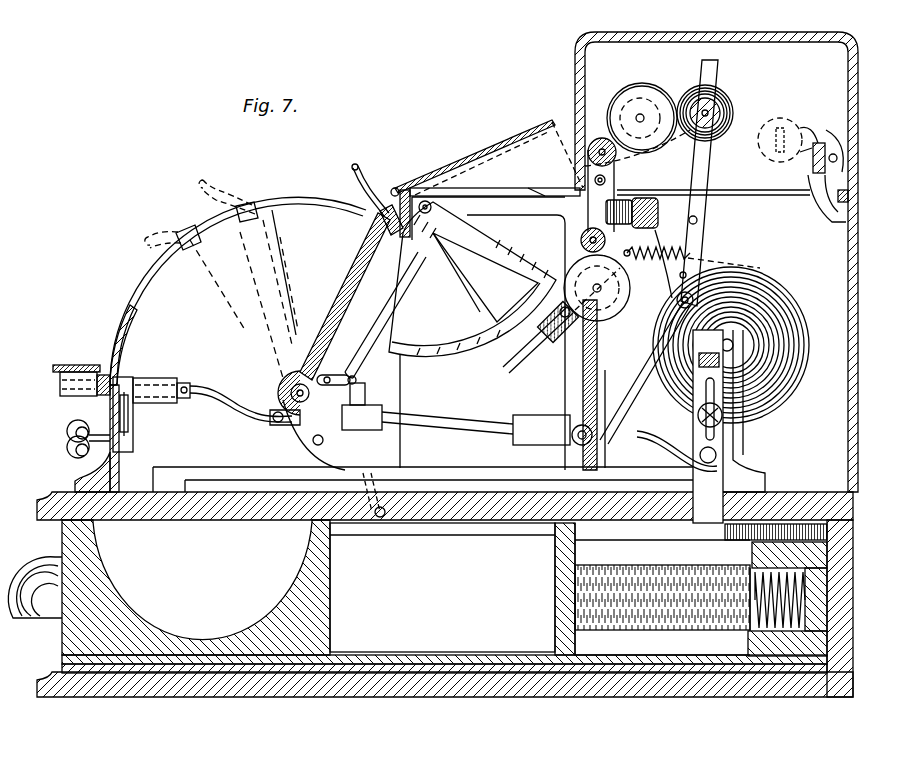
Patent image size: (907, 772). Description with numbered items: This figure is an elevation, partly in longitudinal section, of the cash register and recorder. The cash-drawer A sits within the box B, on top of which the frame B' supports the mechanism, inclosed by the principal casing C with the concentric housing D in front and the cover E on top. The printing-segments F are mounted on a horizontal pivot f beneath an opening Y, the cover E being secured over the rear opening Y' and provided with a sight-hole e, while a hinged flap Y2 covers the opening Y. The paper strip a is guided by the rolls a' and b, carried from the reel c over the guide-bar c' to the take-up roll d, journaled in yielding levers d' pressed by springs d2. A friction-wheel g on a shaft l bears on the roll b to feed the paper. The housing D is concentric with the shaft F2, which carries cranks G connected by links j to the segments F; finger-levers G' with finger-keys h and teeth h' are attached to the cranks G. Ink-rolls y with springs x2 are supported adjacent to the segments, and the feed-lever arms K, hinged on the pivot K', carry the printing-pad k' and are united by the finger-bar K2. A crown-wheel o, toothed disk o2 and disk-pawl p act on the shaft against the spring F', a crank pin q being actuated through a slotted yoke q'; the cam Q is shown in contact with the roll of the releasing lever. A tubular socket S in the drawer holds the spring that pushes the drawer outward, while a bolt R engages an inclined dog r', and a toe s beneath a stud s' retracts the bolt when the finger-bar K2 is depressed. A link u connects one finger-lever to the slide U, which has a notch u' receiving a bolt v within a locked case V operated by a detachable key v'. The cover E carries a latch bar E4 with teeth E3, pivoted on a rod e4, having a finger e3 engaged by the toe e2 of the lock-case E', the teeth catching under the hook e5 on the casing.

The cash-drawer A is at (60, 638).
The box B is at (432, 609).
The frame B' is at (464, 340).
The principal casing C is at (853, 369).
The concentric housing D is at (220, 336).
The cover E is at (716, 249).
The cylinder lock-case E' is at (780, 126).
The teeth E3 is at (822, 218).
The bar E4 is at (828, 162).
The printing-segments F is at (472, 241).
The spring F' is at (543, 179).
The shaft F2 is at (283, 393).
The cranks G is at (244, 299).
The finger-levers G' is at (331, 295).
The arms of feed-lever K is at (267, 401).
The pivot K' is at (552, 443).
The finger-bar K2 is at (70, 365).
The cam Q is at (382, 520).
The bolt R is at (708, 426).
The tubular socket S is at (575, 628).
The slide U is at (160, 380).
The locked case V is at (134, 415).
The opening Y is at (495, 179).
The opening Y' is at (713, 179).
The flap Y2 is at (492, 152).
The paper strip a is at (672, 198).
The roll a' is at (581, 236).
The roll b is at (615, 160).
The reel c is at (731, 345).
The guide-bar c' is at (597, 288).
The take-up roll d is at (716, 113).
The yielding levers d' is at (718, 178).
The springs d2 is at (660, 262).
The sight-hole e is at (590, 178).
The toe e2 is at (812, 158).
The finger e3 is at (810, 130).
The rod e4 is at (835, 152).
The hook e5 is at (850, 204).
The pivot f is at (432, 209).
The friction-wheel g is at (643, 84).
The finger-keys h is at (364, 178).
The tooth h' is at (388, 205).
The links j is at (366, 343).
The elastic printing-pad k' is at (640, 279).
The shaft l is at (645, 118).
The crown-wheel o is at (291, 386).
The toothed disk o2 is at (278, 389).
The disk-pawl p is at (367, 392).
The crank pin q is at (333, 361).
The slotted yoke q' is at (365, 371).
The inclined dog r' is at (776, 507).
The toe s is at (677, 442).
The stud s' is at (732, 433).
The link u is at (241, 408).
The notch u' is at (133, 392).
The bolt v is at (139, 420).
The detachable key v' is at (77, 439).
The arm x is at (527, 345).
The spring x2 is at (560, 340).
The ink-rolls y is at (640, 330).